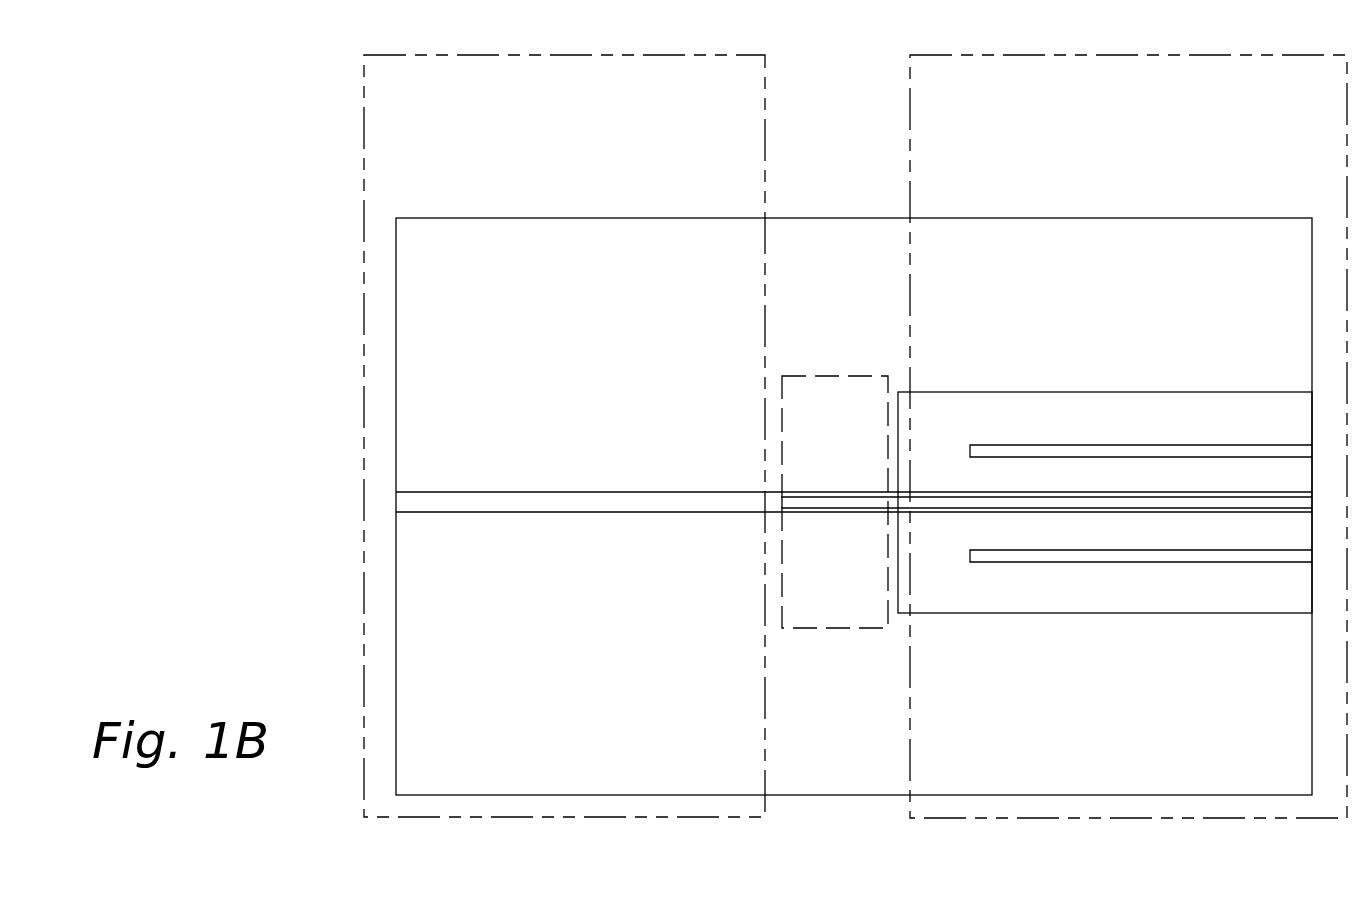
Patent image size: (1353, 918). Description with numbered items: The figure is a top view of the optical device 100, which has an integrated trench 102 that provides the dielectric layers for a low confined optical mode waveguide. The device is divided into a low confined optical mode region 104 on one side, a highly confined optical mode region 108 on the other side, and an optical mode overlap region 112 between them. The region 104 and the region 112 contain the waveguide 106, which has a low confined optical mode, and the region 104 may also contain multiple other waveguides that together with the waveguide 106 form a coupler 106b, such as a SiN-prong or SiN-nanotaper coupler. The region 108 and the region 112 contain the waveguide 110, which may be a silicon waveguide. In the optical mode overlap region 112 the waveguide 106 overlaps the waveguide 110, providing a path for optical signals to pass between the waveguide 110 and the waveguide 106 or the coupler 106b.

The optical device 100 is at (258, 68).
The integrated trench 102 is at (1085, 405).
The low confined optical mode region 104 is at (1263, 55).
The waveguide 106 is at (1178, 497).
The coupler 106b is at (1178, 445).
The highly confined optical mode region 108 is at (680, 55).
The waveguide 110 is at (522, 492).
The optical mode overlap region 112 is at (825, 632).